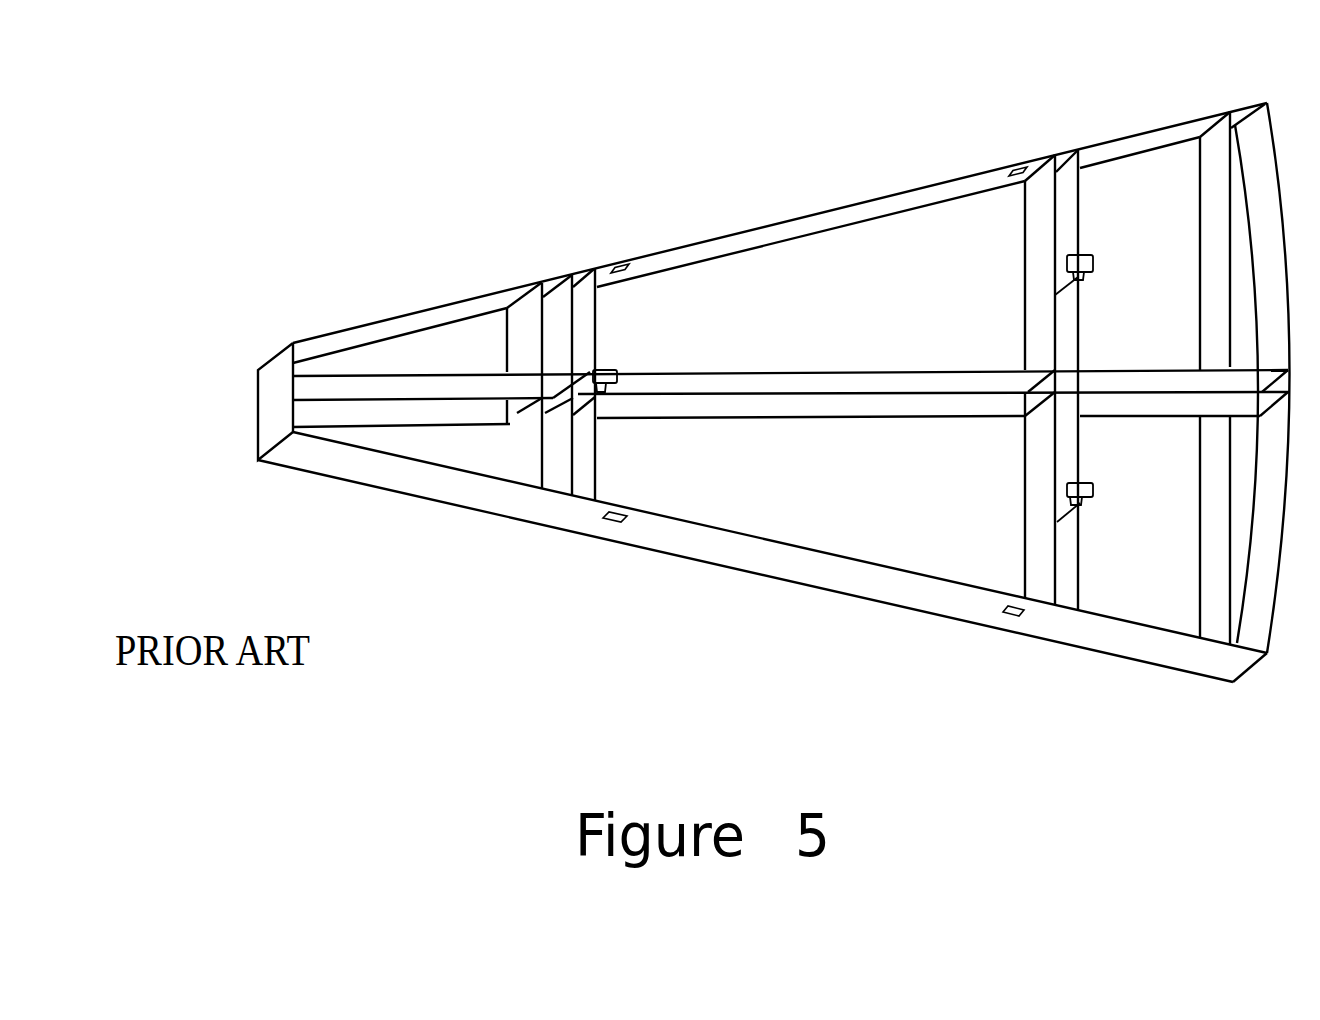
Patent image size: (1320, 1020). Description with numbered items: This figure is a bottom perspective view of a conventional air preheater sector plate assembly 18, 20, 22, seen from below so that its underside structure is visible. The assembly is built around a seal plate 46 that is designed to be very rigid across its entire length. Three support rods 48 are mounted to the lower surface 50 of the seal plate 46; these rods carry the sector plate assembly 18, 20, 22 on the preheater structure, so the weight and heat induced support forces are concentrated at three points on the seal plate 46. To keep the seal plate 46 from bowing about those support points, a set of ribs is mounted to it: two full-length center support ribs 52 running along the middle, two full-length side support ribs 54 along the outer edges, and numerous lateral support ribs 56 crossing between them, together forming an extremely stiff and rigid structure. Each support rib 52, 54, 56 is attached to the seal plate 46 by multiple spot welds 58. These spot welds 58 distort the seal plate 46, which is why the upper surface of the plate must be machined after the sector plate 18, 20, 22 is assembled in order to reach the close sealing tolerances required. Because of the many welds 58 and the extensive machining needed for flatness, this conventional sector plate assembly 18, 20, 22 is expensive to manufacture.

The sector plate assembly 18 is at (726, 405).
The sector plate assembly 20 is at (761, 405).
The sector plate assembly 22 is at (413, 178).
The seal plate 46 is at (923, 553).
The support rod 48 is at (618, 374).
The lower surface 50 is at (878, 526).
The center support rib 52 is at (962, 368).
The side support rib 54 is at (920, 183).
The lateral support rib 56 is at (567, 477).
The spot weld 58 is at (852, 418).